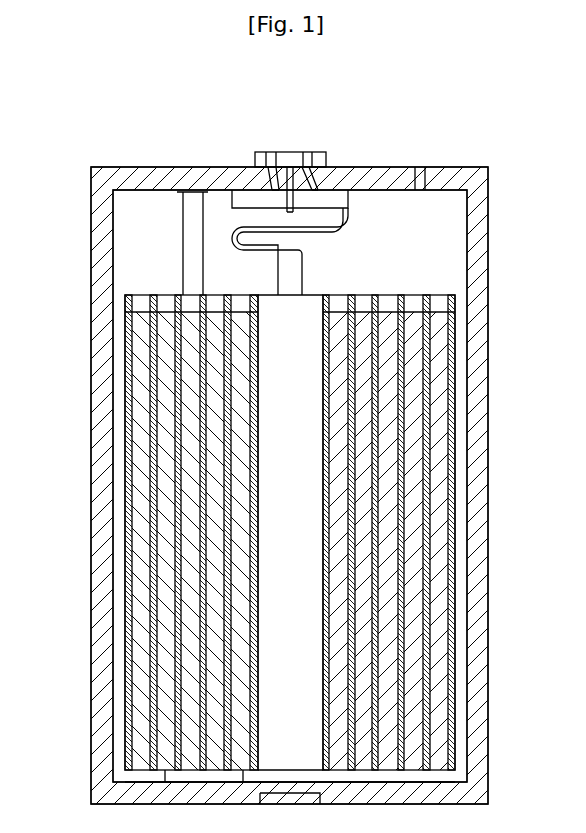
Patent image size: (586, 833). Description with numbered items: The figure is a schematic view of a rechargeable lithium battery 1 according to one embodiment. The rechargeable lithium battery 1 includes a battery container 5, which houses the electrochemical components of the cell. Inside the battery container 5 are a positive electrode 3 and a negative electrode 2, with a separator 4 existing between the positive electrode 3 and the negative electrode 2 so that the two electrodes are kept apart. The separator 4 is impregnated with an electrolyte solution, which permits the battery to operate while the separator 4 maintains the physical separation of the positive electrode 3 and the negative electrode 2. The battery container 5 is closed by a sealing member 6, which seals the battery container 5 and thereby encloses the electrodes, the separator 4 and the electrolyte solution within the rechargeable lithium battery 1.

The rechargeable lithium battery 1 is at (421, 130).
The negative electrode 2 is at (457, 650).
The positive electrode 3 is at (150, 655).
The separator 4 is at (130, 740).
The battery container 5 is at (106, 241).
The sealing member 6 is at (258, 151).